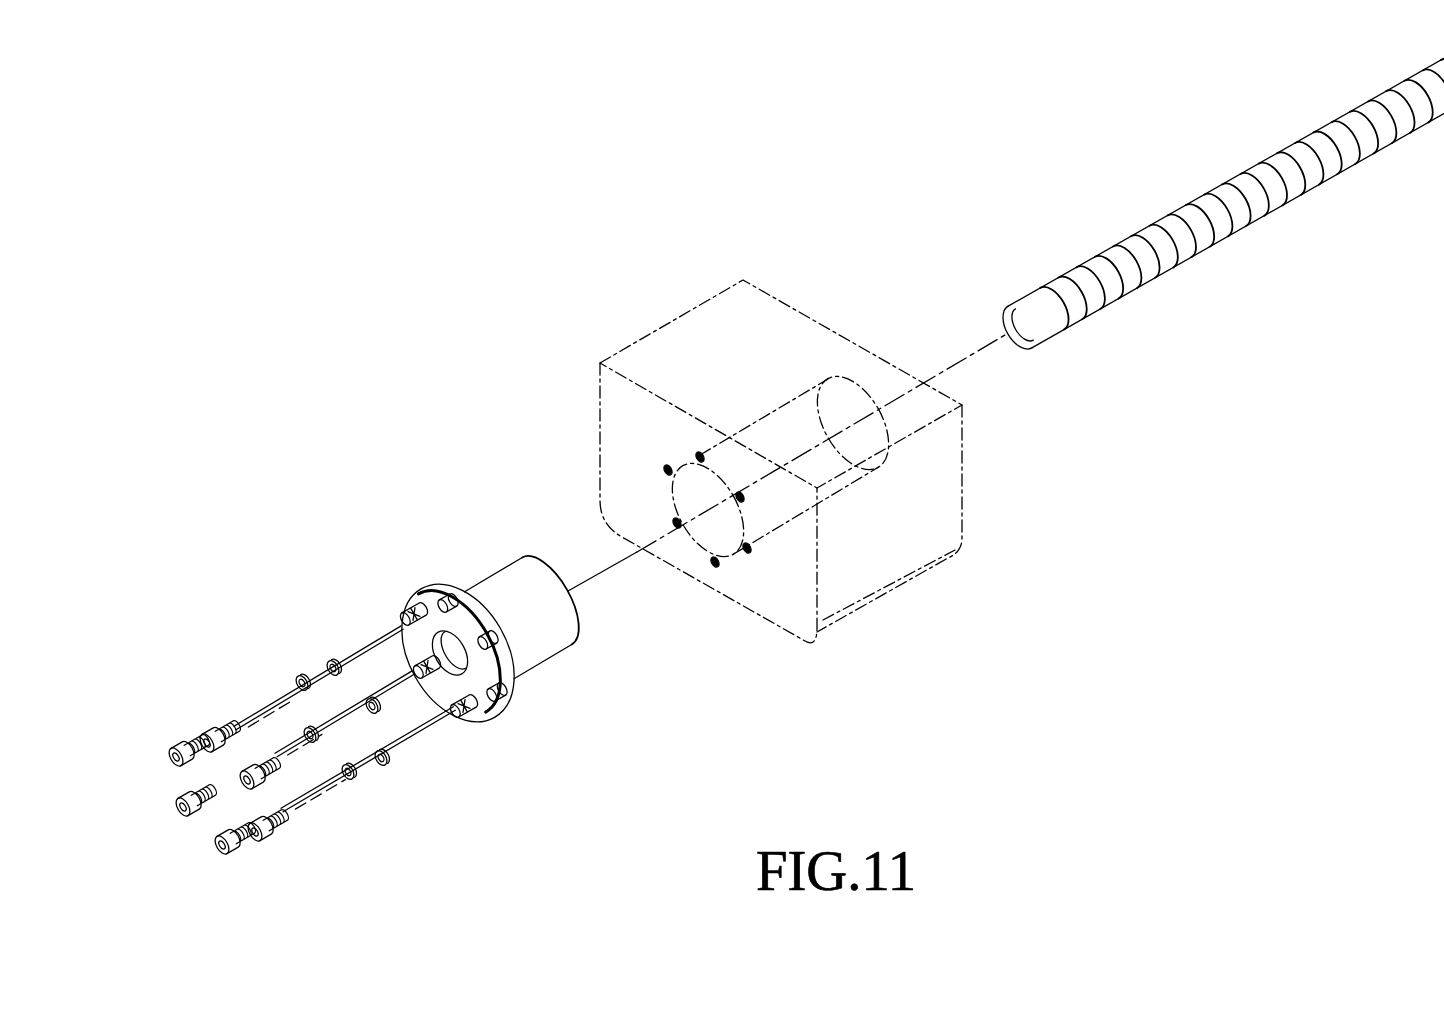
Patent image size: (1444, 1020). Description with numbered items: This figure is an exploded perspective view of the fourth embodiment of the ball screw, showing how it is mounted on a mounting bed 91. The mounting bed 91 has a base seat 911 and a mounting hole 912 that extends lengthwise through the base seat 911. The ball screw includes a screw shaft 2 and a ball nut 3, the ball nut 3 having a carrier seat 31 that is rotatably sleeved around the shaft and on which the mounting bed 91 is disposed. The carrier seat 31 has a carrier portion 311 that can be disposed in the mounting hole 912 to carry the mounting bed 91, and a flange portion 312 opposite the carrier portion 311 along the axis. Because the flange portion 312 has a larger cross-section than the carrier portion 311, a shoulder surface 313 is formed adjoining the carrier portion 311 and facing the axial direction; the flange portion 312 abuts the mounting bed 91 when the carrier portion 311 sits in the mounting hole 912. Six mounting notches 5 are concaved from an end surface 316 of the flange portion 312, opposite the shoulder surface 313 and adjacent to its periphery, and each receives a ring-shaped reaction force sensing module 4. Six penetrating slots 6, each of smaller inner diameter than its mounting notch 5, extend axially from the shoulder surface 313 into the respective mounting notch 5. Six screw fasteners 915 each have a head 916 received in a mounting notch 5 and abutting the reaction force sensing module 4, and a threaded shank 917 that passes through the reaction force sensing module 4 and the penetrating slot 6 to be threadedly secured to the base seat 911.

The screw shaft 2 is at (1268, 219).
The ball nut 3 is at (522, 639).
The carrier seat 31 is at (540, 618).
The carrier portion 311 is at (532, 592).
The flange portion 312 is at (466, 628).
The shoulder surface 313 is at (490, 612).
The end surface 316 is at (435, 690).
The reaction force sensing module 4 is at (300, 678).
The mounting notch 5 is at (404, 606).
The penetrating slot 6 is at (428, 595).
The mounting bed 91 is at (781, 442).
The base seat 911 is at (900, 550).
The mounting hole 912 is at (715, 565).
The screw fastener 915 is at (194, 735).
The head 916 is at (170, 752).
The threaded shank 917 is at (200, 745).